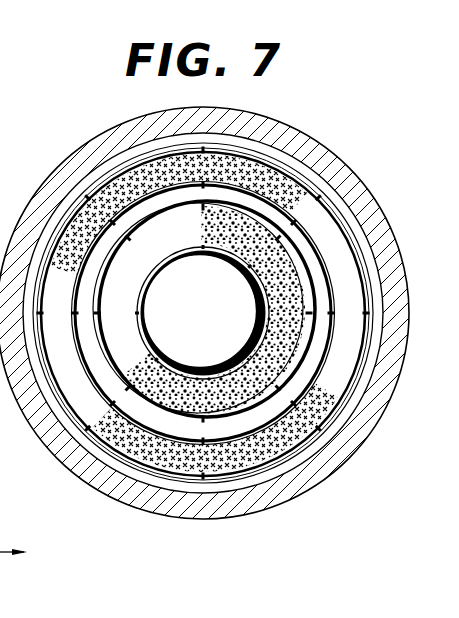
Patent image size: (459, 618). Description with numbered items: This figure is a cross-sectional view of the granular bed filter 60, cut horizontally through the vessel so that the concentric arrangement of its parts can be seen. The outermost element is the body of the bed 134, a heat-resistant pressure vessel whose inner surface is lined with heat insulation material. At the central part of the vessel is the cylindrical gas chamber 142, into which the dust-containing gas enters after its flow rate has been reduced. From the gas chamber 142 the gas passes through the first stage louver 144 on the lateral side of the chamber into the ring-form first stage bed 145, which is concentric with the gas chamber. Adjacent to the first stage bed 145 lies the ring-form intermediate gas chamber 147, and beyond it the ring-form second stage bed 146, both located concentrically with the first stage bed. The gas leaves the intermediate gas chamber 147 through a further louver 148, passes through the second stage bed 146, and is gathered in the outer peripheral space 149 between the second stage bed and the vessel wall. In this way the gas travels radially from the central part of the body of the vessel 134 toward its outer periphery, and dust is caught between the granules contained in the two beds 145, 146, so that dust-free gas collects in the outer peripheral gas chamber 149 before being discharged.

The granular bed filter 60 is at (298, 129).
The body of the bed 134 is at (320, 148).
The outer peripheral space 149 is at (341, 208).
The louver 148 is at (133, 205).
The intermediate gas chamber 147 is at (233, 198).
The second stage bed 146 is at (222, 471).
The first stage bed 145 is at (222, 410).
The first stage louver 144 is at (160, 263).
The gas chamber 142 is at (222, 321).